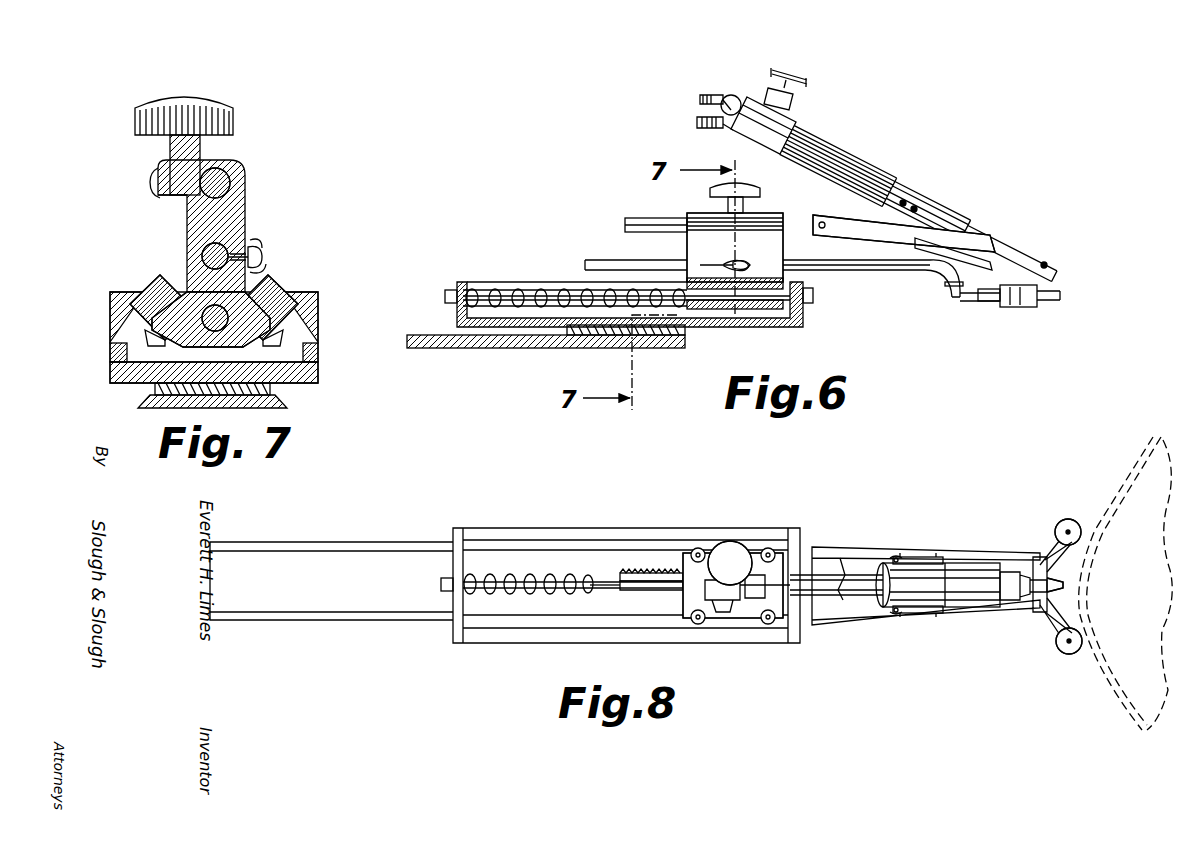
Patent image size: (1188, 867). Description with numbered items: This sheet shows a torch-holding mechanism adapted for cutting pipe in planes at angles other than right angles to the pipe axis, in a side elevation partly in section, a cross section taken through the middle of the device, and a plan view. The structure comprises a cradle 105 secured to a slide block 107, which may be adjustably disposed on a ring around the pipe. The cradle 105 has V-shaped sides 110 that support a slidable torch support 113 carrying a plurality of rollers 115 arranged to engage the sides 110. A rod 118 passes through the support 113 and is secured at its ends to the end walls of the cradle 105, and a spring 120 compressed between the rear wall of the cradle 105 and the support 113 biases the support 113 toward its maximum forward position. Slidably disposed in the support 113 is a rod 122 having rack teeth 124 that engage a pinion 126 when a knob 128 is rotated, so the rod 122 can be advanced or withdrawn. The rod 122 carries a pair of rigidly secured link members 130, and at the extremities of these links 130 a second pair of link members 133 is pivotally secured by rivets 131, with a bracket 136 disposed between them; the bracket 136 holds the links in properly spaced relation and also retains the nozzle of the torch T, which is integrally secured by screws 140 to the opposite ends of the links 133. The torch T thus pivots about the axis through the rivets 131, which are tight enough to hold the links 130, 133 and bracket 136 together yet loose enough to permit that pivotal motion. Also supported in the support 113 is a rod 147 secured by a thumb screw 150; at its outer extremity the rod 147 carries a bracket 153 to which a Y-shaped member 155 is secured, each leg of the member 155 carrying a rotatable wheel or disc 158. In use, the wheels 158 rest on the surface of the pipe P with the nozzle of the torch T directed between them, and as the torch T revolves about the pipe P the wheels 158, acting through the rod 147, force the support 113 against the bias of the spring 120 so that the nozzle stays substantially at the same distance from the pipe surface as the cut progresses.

In FIG. 7, the cradle 105 is at (112, 352).
In FIG. 8, the cradle 105 is at (500, 528).
In FIG. 7, the slide block 107 is at (290, 403).
In FIG. 6, the slide block 107 is at (480, 348).
In FIG. 8, the slide block 107 is at (404, 524).
In FIG. 7, the V-shaped sides 110 is at (112, 310).
In FIG. 7, the torch support 113 is at (250, 300).
In FIG. 6, the torch support 113 is at (700, 272).
In FIG. 8, the torch support 113 is at (736, 586).
In FIG. 7, the rollers 115 is at (152, 288).
In FIG. 7, the rod 118 is at (220, 330).
In FIG. 6, the rod 118 is at (500, 290).
In FIG. 8, the rod 118 is at (568, 585).
In FIG. 6, the spring 120 is at (518, 288).
In FIG. 8, the spring 120 is at (520, 580).
In FIG. 7, the rod 122 is at (225, 190).
In FIG. 6, the rod 122 is at (625, 225).
In FIG. 8, the rod 122 is at (635, 590).
In FIG. 7, the rack teeth 124 is at (200, 170).
In FIG. 8, the rack teeth 124 is at (648, 573).
In FIG. 7, the pinion 126 is at (158, 195).
In FIG. 7, the knob 128 is at (232, 112).
In FIG. 6, the knob 128 is at (710, 191).
In FIG. 8, the knob 128 is at (744, 571).
In FIG. 6, the link members 130 is at (840, 222).
In FIG. 8, the link members 130 is at (848, 545).
In FIG. 6, the rivets 131 is at (1045, 260).
In FIG. 8, the link members 133 is at (930, 557).
In FIG. 8, the bracket 136 is at (1063, 588).
In FIG. 8, the screws 140 is at (898, 555).
In FIG. 7, the rod 147 is at (202, 255).
In FIG. 6, the rod 147 is at (860, 270).
In FIG. 7, the thumb screw 150 is at (265, 240).
In FIG. 6, the thumb screw 150 is at (750, 262).
In FIG. 6, the bracket 153 is at (956, 286).
In FIG. 6, the Y-shaped member 155 is at (986, 303).
In FIG. 8, the Y-shaped member 155 is at (1072, 555).
In FIG. 6, the wheels 158 is at (1060, 298).
In FIG. 8, the wheels 158 is at (1068, 519).
In FIG. 6, the torch T is at (870, 168).
In FIG. 8, the torch T is at (905, 610).
In FIG. 8, the pipe P is at (1130, 448).